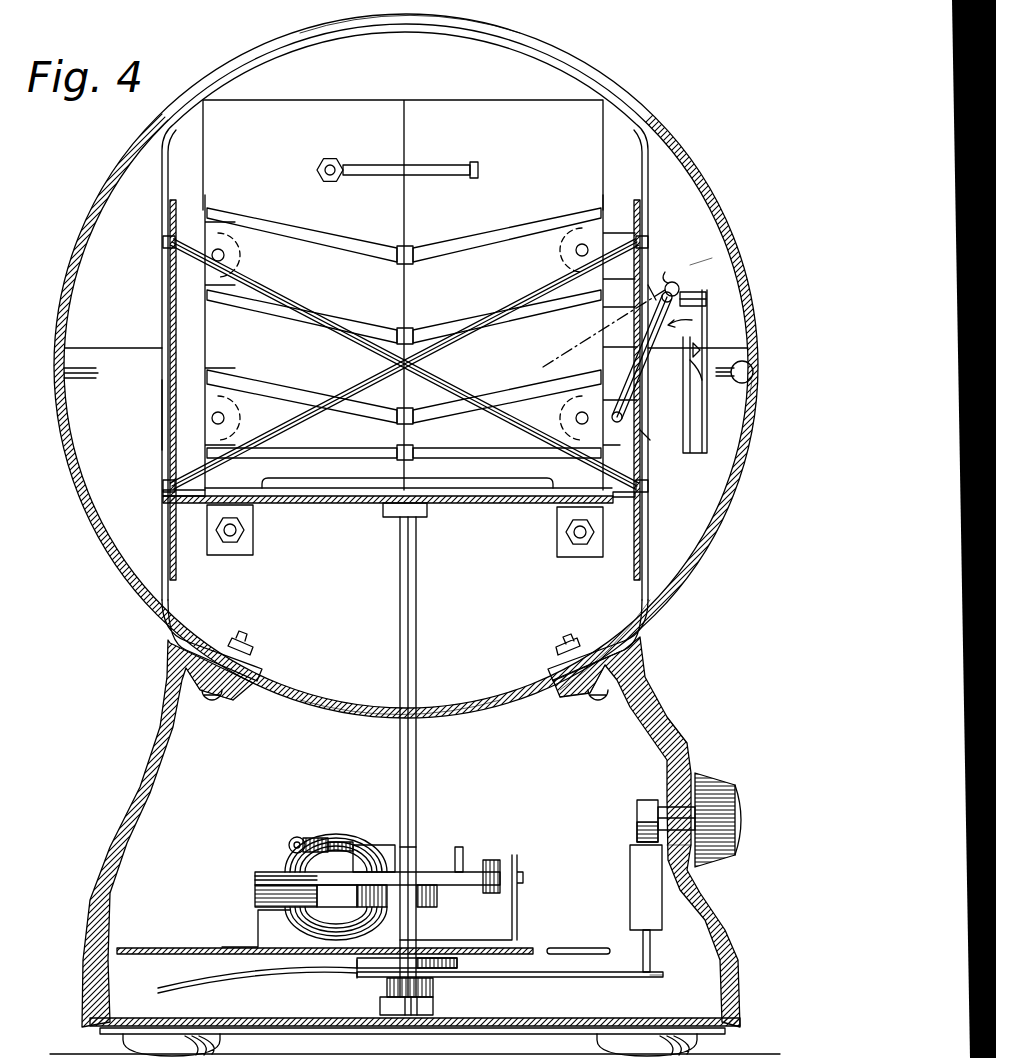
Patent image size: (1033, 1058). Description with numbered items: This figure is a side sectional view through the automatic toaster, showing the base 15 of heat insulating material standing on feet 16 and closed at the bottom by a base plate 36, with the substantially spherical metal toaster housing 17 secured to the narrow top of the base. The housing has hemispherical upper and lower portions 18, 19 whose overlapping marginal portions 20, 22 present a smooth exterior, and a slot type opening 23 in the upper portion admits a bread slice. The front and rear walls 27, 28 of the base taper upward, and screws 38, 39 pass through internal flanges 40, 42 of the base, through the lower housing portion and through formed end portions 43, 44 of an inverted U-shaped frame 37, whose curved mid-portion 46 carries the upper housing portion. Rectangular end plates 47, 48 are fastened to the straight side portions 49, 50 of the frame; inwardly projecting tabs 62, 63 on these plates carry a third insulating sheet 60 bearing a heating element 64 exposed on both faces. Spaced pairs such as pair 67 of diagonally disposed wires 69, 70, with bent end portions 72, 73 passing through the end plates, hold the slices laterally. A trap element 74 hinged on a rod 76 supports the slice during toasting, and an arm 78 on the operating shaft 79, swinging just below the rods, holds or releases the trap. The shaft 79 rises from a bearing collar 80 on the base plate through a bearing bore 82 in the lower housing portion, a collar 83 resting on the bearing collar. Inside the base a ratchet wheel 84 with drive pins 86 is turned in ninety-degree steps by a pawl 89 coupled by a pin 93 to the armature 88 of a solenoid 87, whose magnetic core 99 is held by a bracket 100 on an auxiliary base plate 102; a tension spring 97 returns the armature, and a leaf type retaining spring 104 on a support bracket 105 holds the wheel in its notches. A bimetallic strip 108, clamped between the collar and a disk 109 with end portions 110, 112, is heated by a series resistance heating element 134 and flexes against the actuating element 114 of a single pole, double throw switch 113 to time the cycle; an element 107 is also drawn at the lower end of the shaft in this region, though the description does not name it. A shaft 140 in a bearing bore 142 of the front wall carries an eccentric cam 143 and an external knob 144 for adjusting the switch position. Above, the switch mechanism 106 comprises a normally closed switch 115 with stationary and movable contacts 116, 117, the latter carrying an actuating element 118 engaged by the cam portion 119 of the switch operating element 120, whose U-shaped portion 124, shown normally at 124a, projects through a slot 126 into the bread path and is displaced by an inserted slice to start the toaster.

The base 15 is at (686, 740).
The feet 16 is at (740, 1042).
The toaster housing 17 is at (700, 161).
The upper portion of housing 18 is at (718, 258).
The lower portion of housing 19 is at (704, 548).
The marginal portion 20 is at (752, 367).
The inner marginal portion 22 is at (755, 388).
The slot type opening 23 is at (604, 78).
The front wall 27 is at (730, 935).
The rear wall 28 is at (84, 890).
The base plate 36 is at (476, 1027).
The frame 37 is at (161, 413).
The screw 38 is at (215, 702).
The screw 39 is at (600, 702).
The internal flange 40 is at (166, 678).
The internal flange 42 is at (646, 680).
The formed end portion 43 is at (232, 643).
The formed end portion 44 is at (570, 645).
The curved mid-portion 46 is at (213, 74).
The end plate 47 is at (170, 306).
The end plate 48 is at (652, 292).
The straight side portion 49 is at (160, 372).
The straight side portion 50 is at (642, 463).
The third insulating sheet 60 is at (448, 100).
The tab 62 is at (180, 268).
The tab 63 is at (630, 418).
The heating element 64 is at (468, 228).
The pair of diagonally disposed wires 67 is at (455, 385).
The diagonally disposed wire 69 is at (290, 302).
The diagonally disposed wire 70 is at (547, 288).
The end portion of wire 72 is at (163, 243).
The end portion of wire 73 is at (640, 258).
The trap element 74 is at (330, 503).
The rod 76 is at (172, 503).
The arm 78 is at (435, 518).
The operating shaft 79 is at (418, 632).
The bearing collar 80 is at (438, 1004).
The bearing bore 82 is at (392, 724).
The collar 83 is at (386, 992).
The ratchet wheel 84 is at (470, 872).
The drive pin 86 is at (340, 841).
The solenoid 87 is at (286, 860).
The armature 88 is at (400, 922).
The pawl 89 is at (370, 845).
The pin 93 is at (318, 837).
The tension spring 97 is at (295, 837).
The magnetic core 99 is at (254, 886).
The bracket 100 is at (256, 922).
The auxiliary base plate 102 is at (140, 947).
The leaf type retaining spring 104 is at (500, 862).
The support bracket 105 is at (520, 905).
The switch mechanism 106 is at (700, 322).
The lower plate 107 is at (463, 983).
The bimetallic strip 108 is at (440, 958).
The disk 109 is at (360, 966).
The end portion of bimetallic strip 110 is at (222, 985).
The end portion of bimetallic strip 112 is at (646, 973).
The single pole, double throw switch 113 is at (630, 870).
The actuating element 114 is at (656, 972).
The single pole, single throw switch 115 is at (706, 415).
The stationary contact 116 is at (708, 375).
The movable contact 117 is at (702, 348).
The actuating element 118 is at (708, 297).
The cam portion 119 is at (678, 283).
The switch operating element 120 is at (582, 408).
The U-shaped portion 124 is at (545, 432).
The normal position of U-shaped portion 124a is at (560, 362).
The slot 126 is at (642, 440).
The resistance heating element 134 is at (580, 947).
The shaft 140 is at (692, 797).
The bearing bore 142 is at (696, 862).
The eccentric cam 143 is at (638, 815).
The knob 144 is at (740, 815).